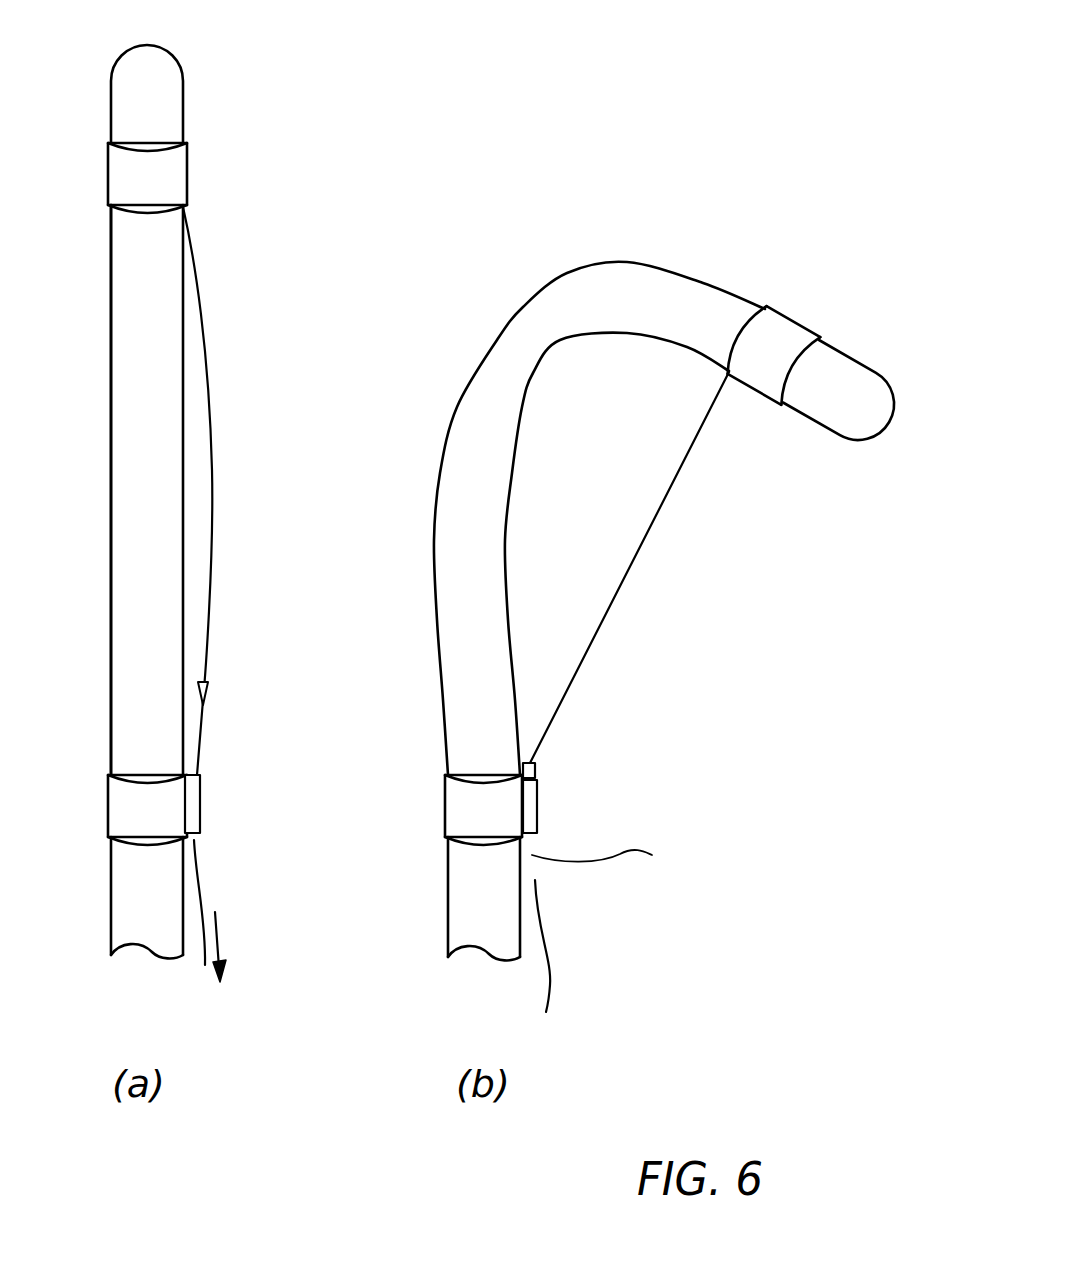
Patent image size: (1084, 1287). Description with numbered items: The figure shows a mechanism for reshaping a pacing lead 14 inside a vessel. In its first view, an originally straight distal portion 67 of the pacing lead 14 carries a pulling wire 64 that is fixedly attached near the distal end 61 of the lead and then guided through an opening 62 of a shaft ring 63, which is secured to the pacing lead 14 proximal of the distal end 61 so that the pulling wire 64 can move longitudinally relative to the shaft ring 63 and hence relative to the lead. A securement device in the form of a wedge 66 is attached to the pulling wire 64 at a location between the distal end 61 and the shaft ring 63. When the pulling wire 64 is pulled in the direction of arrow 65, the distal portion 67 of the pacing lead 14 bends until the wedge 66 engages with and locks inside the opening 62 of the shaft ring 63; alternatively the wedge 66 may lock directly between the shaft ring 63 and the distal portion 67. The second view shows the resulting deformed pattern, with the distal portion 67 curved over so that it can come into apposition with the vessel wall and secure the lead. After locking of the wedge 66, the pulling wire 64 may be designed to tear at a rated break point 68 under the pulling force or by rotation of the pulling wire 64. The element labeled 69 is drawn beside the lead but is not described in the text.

The pacing lead 14 is at (186, 90).
The distal end 61 is at (190, 170).
The opening 62 is at (201, 807).
The shaft ring 63 is at (108, 810).
The pulling wire 64 is at (211, 442).
The arrow 65 is at (223, 946).
The securement device (wedge) 66 is at (210, 696).
The distal portion 67 is at (110, 360).
The rated break point 68 is at (610, 853).
The bending line 69 is at (549, 970).